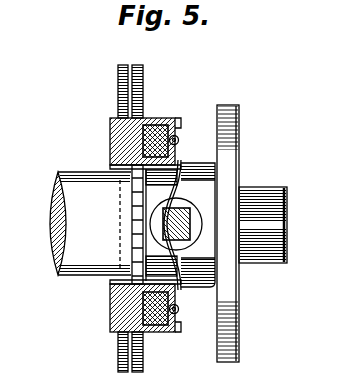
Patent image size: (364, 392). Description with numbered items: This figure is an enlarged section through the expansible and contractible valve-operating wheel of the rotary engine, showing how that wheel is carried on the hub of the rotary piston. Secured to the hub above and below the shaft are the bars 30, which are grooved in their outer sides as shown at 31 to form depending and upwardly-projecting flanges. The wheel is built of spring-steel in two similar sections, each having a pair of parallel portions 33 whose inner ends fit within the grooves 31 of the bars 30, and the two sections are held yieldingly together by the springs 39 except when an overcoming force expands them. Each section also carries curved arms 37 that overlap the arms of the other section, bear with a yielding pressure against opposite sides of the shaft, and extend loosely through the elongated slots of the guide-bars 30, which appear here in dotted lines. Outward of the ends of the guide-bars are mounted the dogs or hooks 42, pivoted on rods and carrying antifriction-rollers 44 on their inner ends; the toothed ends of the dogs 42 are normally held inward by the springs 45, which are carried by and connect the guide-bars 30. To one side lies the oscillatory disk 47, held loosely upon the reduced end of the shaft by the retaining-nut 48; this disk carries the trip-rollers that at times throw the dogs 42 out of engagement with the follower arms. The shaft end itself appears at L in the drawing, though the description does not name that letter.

The lever shaft L is at (78, 223).
The bars 30 is at (110, 141).
The grooves 31 is at (179, 120).
The parallel portions 33 is at (152, 126).
The curved arms 37 is at (135, 67).
The springs 39 is at (179, 141).
The dogs or hooks 42 is at (172, 207).
The antifriction-rollers 44 is at (189, 209).
The springs 45 is at (181, 254).
The oscillatory disk 47 is at (229, 162).
The retaining-nut 48 is at (287, 227).